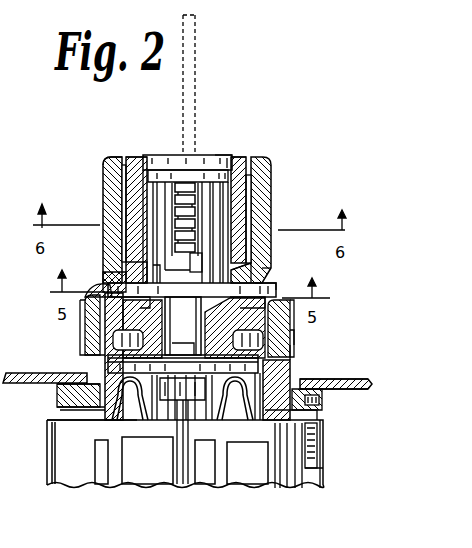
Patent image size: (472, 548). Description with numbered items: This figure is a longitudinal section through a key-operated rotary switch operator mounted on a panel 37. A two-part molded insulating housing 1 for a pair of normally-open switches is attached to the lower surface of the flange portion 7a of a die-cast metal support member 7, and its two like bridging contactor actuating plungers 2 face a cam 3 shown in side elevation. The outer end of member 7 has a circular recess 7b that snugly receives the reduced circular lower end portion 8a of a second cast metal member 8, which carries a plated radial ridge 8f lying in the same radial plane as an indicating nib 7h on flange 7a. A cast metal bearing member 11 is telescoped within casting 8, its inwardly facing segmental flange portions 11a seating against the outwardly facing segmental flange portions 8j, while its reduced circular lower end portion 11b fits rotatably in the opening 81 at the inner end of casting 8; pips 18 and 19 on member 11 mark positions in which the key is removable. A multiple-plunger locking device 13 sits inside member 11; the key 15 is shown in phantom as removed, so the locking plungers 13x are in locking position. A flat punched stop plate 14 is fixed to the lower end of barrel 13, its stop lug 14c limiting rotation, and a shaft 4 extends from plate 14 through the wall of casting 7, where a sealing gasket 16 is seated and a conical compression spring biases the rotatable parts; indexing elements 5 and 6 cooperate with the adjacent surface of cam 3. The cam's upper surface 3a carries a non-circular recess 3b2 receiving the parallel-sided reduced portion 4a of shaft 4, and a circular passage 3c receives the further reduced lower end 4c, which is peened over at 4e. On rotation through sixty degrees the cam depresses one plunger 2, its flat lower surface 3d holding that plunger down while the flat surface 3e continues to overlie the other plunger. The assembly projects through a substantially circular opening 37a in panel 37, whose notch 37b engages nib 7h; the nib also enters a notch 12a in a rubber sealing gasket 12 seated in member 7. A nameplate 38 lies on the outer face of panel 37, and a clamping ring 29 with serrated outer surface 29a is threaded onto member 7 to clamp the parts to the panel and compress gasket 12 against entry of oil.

The molded insulating housing 1 is at (332, 464).
The bridging contactor actuating plunger 2 is at (107, 423).
The cam 3 is at (192, 486).
The upper surface of cam 3a is at (294, 352).
The non-circular recess 3b2 is at (247, 463).
The circular passage 3c is at (169, 442).
The flat lower surface portion of cam 3d is at (205, 440).
The flat downwardly facing surface of cam 3e is at (135, 412).
The shaft 4 is at (184, 344).
The parallel-sided reduced portion of shaft 4a is at (118, 462).
The reduced circular lower end portion of shaft 4c is at (178, 426).
The peened end of shaft 4e is at (178, 484).
The indexing element 5 is at (86, 361).
The indexing element 6 is at (230, 423).
The die-cast metal support member 7 is at (104, 294).
The flange portion of support member 7a is at (292, 413).
The circular recess 7b is at (272, 290).
The indicating nib 7h is at (60, 411).
The second cast metal member 8 is at (273, 192).
The opening in casting 81 is at (268, 251).
The reduced circular lower end portion 8a is at (265, 271).
The radially extending ridge 8f is at (110, 156).
The outwardly facing segmental flange portions 8j is at (128, 192).
The bearing member 11 is at (248, 157).
The inwardly facing segmental flange portions 11a is at (134, 156).
The reduced circular lower end portion of bearing member 11b is at (128, 271).
The sealing gasket 12 is at (321, 400).
The notch in gasket 12a is at (60, 399).
The locking device 13 is at (203, 162).
The locking plungers 13x is at (189, 182).
The stop plate 14 is at (170, 290).
The stop lug 14c is at (112, 281).
The key 15 is at (197, 48).
The sealing gasket 16 is at (86, 337).
The pip 18 is at (235, 156).
The pip 19 is at (144, 156).
The clamping ring 29 is at (296, 323).
The serrated outer surface portion 29a is at (297, 336).
The panel 37 is at (350, 380).
The panel opening 37a is at (308, 380).
The notch in panel opening 37b is at (55, 387).
The nameplate 38 is at (68, 378).